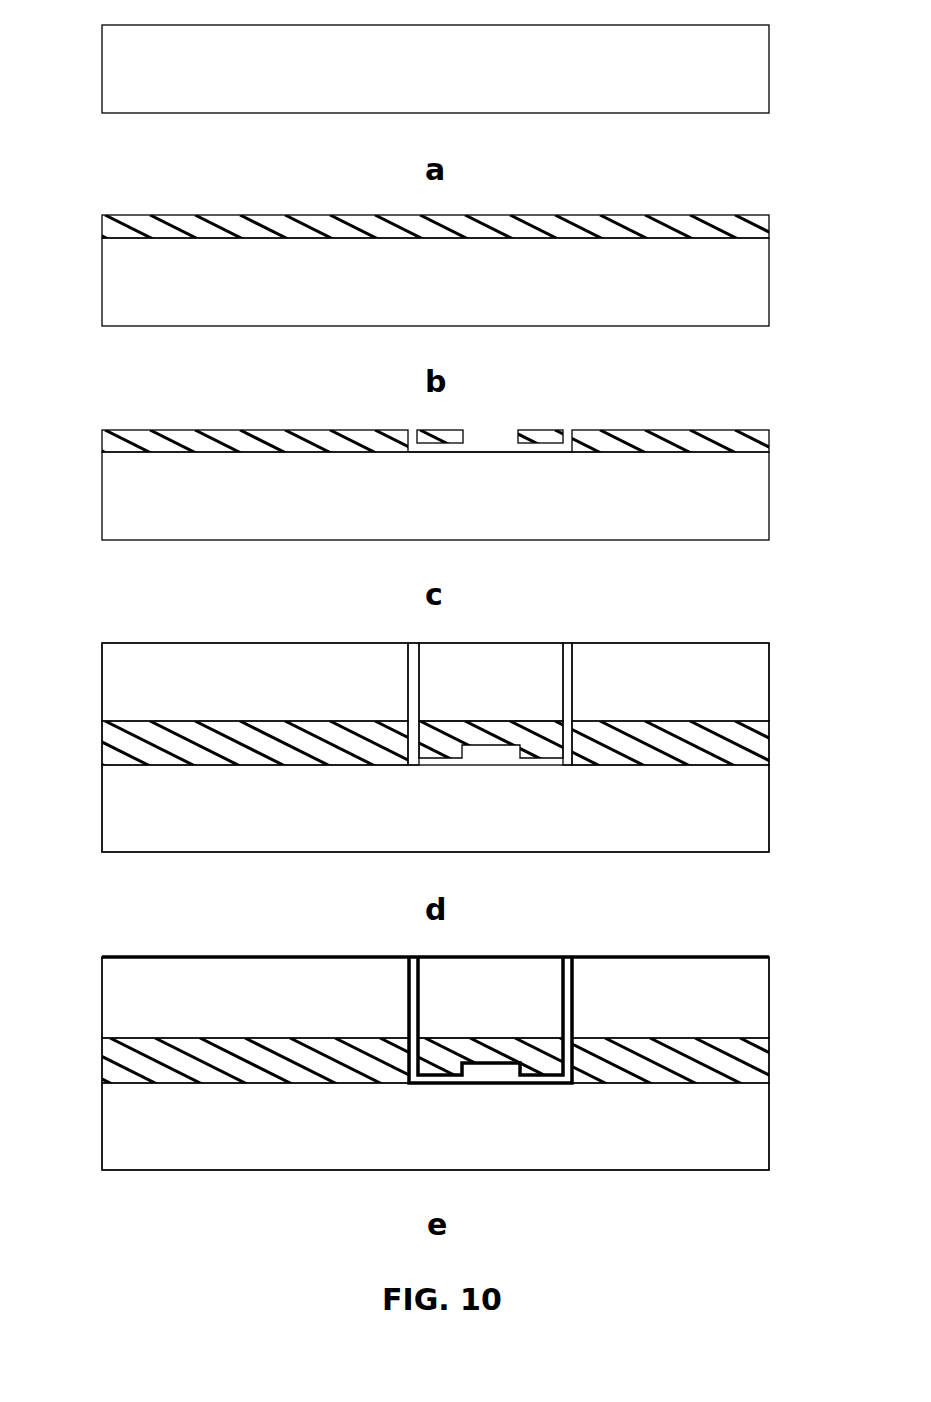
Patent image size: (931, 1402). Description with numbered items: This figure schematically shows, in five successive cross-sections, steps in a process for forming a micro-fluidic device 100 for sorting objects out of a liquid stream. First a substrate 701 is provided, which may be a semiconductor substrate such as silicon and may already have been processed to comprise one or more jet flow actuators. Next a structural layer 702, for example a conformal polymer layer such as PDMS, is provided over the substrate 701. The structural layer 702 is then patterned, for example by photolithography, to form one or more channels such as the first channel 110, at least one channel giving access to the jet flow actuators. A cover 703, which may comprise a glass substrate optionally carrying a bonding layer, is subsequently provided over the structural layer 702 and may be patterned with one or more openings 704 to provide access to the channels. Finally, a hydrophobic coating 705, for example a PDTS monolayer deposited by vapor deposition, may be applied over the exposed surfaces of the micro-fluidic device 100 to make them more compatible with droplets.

The substrate 701 is at (760, 62).
The structural layer 702 is at (757, 232).
The cover 703 is at (758, 684).
The openings 704 is at (567, 642).
The hydrophobic coating 705 is at (552, 1083).
The first channel 110 is at (512, 442).
The micro-fluidic device 100 is at (90, 663).